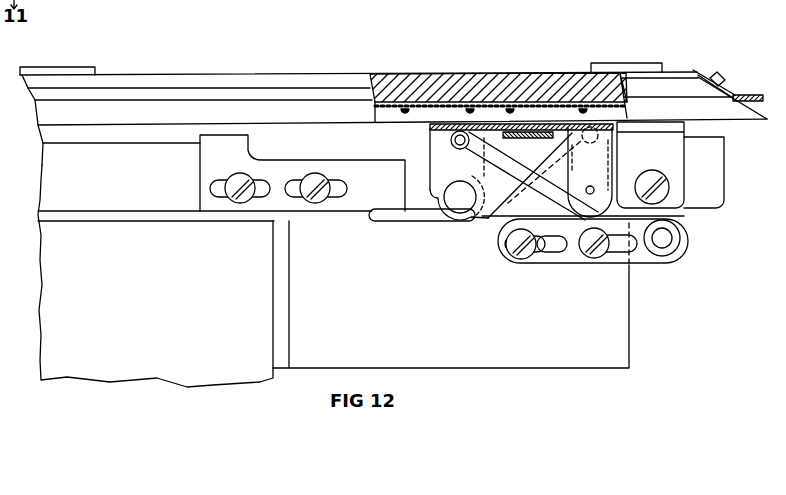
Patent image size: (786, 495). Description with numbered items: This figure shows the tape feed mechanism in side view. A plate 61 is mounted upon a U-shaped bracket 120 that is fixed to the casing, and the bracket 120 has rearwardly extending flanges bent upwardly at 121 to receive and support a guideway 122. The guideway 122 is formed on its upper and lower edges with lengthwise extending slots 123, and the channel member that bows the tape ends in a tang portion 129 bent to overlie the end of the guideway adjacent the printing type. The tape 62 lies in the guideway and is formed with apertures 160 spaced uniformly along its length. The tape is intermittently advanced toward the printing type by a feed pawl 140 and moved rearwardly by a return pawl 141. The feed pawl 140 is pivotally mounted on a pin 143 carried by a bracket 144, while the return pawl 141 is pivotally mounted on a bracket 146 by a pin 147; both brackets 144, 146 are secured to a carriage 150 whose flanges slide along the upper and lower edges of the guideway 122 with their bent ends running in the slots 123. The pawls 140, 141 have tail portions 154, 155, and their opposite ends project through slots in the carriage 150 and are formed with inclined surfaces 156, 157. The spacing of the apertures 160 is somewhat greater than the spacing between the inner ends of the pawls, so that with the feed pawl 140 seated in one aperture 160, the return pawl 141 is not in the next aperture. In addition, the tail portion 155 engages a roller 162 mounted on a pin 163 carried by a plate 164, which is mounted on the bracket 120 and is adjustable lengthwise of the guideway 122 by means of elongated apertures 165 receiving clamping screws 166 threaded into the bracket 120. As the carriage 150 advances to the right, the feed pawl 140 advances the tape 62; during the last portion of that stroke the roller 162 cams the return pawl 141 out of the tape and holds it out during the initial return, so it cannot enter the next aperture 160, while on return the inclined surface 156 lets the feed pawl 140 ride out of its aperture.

The plate 61 is at (205, 276).
The U-shaped bracket 120 is at (451, 294).
The upwardly bent flange 121 is at (76, 73).
The guideway 122 is at (394, 143).
The lengthwise extending slots 123 is at (210, 88).
The tang portion 129 is at (707, 72).
The tape 62 is at (411, 102).
The feed pawl 140 is at (515, 191).
The return pawl 141 is at (480, 156).
The pin 143 is at (455, 204).
The bracket 144 is at (429, 153).
The bracket 146 is at (612, 161).
The pin 147 is at (598, 182).
The carriage 150 is at (490, 122).
The tail portion 154 is at (430, 222).
The tail portion 155 is at (680, 210).
The inclined surface 156 is at (572, 115).
The inclined surface 157 is at (476, 110).
The apertures 160 is at (438, 110).
The roller 162 is at (680, 242).
The pin 163 is at (661, 244).
The plate 164 is at (603, 257).
The elongated apertures 165 is at (551, 248).
The clamping screws 166 is at (510, 257).